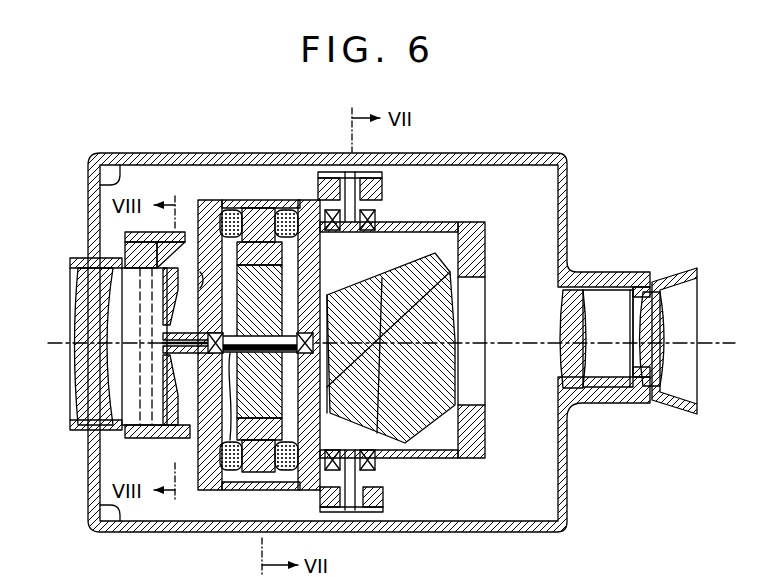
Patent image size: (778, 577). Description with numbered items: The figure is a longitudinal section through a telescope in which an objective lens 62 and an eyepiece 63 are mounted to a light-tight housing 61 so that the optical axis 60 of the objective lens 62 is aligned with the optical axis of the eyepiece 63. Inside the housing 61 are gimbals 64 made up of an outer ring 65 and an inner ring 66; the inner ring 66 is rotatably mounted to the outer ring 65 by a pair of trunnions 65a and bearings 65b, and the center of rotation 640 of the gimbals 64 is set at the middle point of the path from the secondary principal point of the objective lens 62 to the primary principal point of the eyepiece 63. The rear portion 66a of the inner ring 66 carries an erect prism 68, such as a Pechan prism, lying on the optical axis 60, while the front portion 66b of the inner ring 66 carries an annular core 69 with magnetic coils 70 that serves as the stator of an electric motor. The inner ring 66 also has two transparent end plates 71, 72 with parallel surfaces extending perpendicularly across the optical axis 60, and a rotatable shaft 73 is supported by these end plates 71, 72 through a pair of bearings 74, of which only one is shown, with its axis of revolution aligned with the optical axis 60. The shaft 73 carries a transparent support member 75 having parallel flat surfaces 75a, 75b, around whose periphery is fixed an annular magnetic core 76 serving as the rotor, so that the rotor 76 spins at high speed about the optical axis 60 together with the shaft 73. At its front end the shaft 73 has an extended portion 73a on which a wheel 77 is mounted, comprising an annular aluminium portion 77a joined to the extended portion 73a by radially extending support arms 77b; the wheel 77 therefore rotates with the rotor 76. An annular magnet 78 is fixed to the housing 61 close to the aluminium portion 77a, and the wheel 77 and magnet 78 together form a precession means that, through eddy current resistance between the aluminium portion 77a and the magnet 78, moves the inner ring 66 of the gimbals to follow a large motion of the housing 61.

The optical axis 60 is at (500, 343).
The light-tight housing 61 is at (524, 153).
The objective lens 62 is at (92, 362).
The eyepiece 63 is at (644, 273).
The gimbals 64 is at (450, 220).
The outer ring 65 is at (372, 212).
The trunnions 65a is at (353, 195).
The bearings 65b is at (376, 218).
The inner ring 66 is at (298, 198).
The rear portion of inner ring 66a is at (460, 222).
The front portion of inner ring 66b is at (230, 212).
The erect prism 68 is at (468, 455).
The annular core 69 is at (256, 212).
The magnetic coils 70 is at (226, 215).
The end plate 71 is at (203, 277).
The end plate 72 is at (282, 284).
The rotatable shaft 73 is at (205, 445).
The extended portion 73a is at (178, 347).
The bearings 74 is at (327, 388).
The transparent support member 75 is at (232, 450).
The parallel flat surface 75a is at (230, 333).
The parallel flat surface 75b is at (313, 264).
The annular magnetic core 76 is at (255, 248).
The wheel 77 is at (158, 316).
The annular aluminium portion 77a is at (173, 272).
The radially extending support arms 77b is at (167, 383).
The annular magnet 78 is at (130, 250).
The center of rotation 640 is at (352, 343).